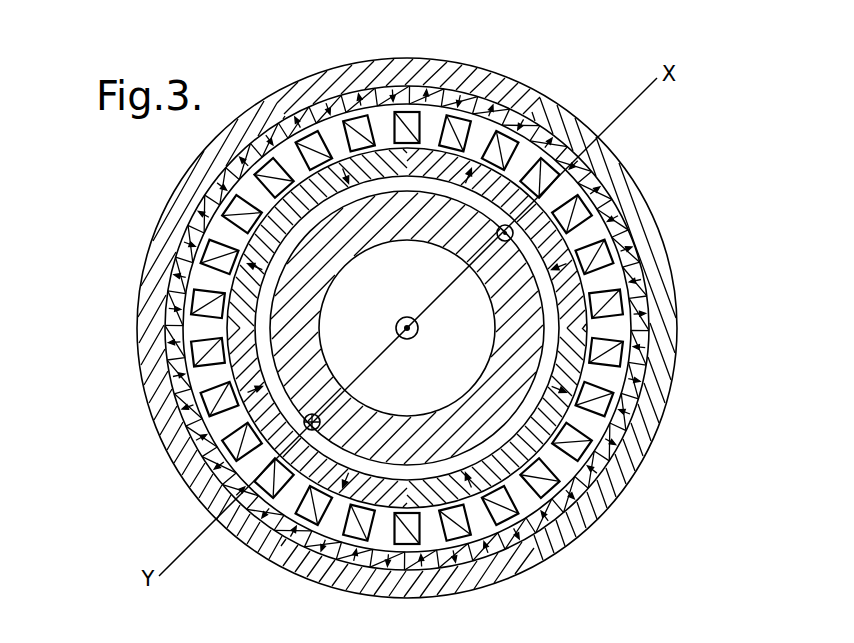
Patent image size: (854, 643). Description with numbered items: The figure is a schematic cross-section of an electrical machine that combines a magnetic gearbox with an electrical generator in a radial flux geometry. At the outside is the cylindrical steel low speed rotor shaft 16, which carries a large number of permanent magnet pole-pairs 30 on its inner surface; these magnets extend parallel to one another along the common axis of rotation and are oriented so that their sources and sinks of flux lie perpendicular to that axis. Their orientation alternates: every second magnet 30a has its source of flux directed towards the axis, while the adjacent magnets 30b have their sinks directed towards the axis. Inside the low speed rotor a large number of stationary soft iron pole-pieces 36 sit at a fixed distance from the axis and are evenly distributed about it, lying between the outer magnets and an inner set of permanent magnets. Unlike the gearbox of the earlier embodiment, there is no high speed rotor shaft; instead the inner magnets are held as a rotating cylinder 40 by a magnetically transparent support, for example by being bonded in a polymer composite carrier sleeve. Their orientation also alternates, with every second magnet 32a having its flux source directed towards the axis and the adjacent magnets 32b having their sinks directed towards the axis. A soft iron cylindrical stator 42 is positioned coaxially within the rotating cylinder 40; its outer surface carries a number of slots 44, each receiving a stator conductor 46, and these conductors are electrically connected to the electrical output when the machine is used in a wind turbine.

The low speed rotor shaft 16 is at (515, 82).
The permanent magnet pole-pairs 30 is at (403, 307).
The magnets with flux source directed towards the axis 30a is at (640, 207).
The magnets with flux sink directed towards the axis 30b is at (330, 96).
The stationary soft iron pole-pieces 36 is at (627, 410).
The magnets with flux source directed towards the axis 32a is at (523, 447).
The magnets with flux sink directed towards the axis 32b is at (383, 490).
The rotating cylinder 40 is at (318, 202).
The soft iron cylindrical stator 42 is at (457, 408).
The slots 44 is at (322, 420).
The stator conductor 46 is at (504, 243).